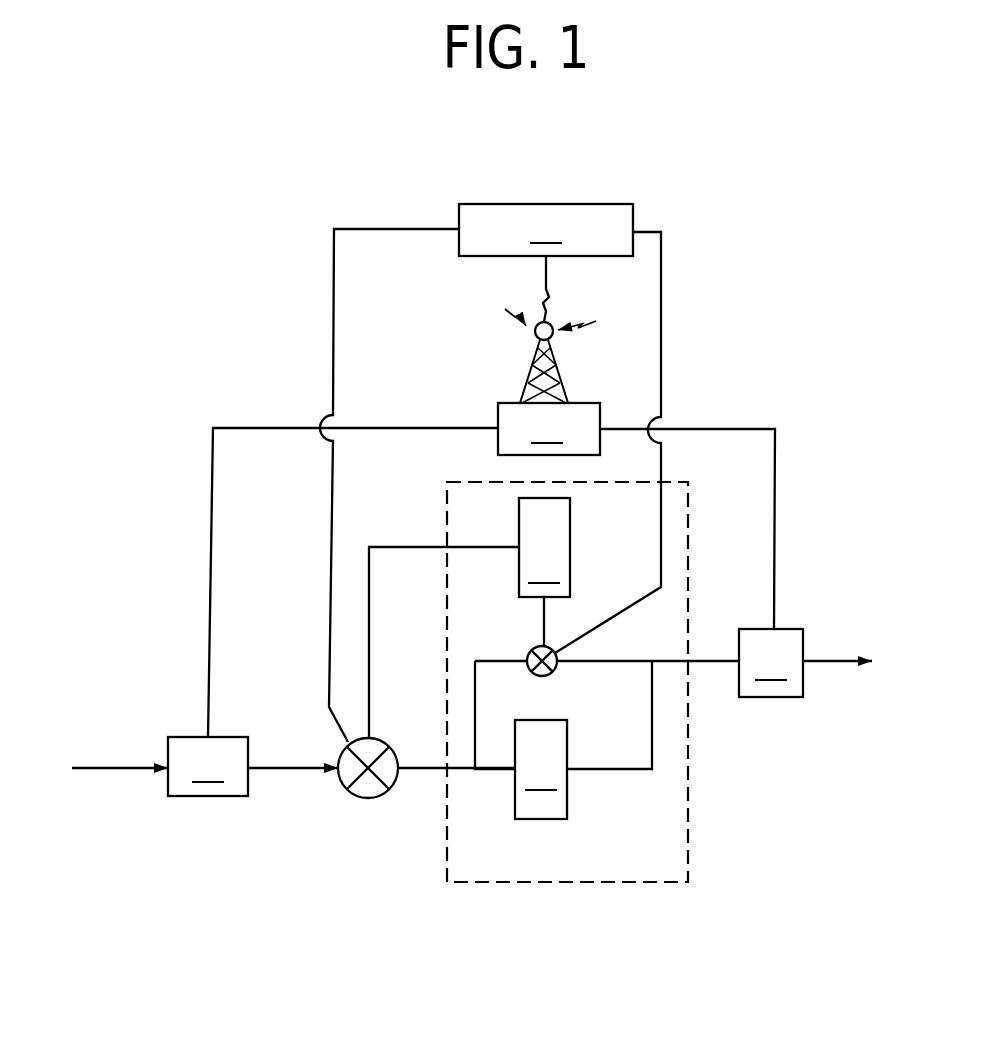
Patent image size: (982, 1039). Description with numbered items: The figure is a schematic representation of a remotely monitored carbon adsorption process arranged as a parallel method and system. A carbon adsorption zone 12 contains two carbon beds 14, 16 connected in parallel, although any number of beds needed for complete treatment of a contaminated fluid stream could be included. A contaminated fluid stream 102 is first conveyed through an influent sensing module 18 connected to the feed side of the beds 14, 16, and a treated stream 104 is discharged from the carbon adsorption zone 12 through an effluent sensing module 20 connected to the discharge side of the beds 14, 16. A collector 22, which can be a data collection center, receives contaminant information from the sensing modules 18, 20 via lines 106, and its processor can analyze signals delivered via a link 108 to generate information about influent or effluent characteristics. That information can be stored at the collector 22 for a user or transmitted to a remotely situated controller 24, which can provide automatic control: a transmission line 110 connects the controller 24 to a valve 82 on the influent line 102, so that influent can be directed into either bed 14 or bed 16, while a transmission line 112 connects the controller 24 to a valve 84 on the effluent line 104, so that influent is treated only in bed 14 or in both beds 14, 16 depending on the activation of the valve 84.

The carbon adsorption zone 12 is at (690, 553).
The carbon bed 14 is at (469, 618).
The carbon bed 16 is at (563, 740).
The influent sensing module 18 is at (253, 766).
The effluent sensing module 20 is at (771, 663).
The collector 22 is at (549, 429).
The controller 24 is at (546, 230).
The valve 82 is at (343, 788).
The valve 84 is at (546, 676).
The contaminated fluid stream 102 is at (120, 768).
The treated stream 104 is at (710, 661).
The lines 106 is at (257, 428).
The link 108 is at (546, 285).
The transmission line 110 is at (333, 331).
The transmission line 112 is at (661, 338).